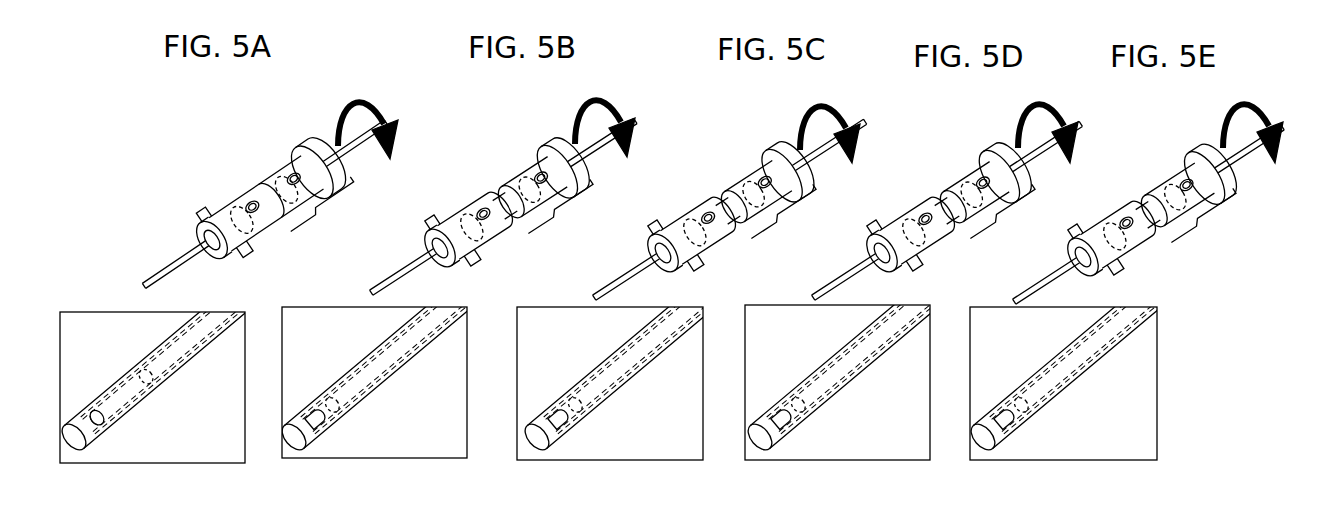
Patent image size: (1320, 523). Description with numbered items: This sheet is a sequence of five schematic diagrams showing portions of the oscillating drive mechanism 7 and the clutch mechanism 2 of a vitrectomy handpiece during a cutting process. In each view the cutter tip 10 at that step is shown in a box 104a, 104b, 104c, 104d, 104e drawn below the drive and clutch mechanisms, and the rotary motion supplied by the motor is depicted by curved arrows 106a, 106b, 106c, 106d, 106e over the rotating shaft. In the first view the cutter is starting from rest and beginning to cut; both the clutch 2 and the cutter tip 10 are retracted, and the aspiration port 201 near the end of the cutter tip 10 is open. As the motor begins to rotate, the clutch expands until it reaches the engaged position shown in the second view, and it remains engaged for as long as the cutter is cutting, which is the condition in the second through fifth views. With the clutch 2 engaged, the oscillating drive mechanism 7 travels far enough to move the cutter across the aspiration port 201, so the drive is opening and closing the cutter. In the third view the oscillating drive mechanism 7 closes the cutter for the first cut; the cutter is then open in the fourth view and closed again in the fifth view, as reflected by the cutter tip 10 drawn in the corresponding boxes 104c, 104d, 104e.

In FIG. 5A, the clutch mechanism 2 is at (330, 168).
In FIG. 5B, the clutch mechanism 2 is at (568, 168).
In FIG. 5C, the clutch mechanism 2 is at (794, 171).
In FIG. 5D, the clutch mechanism 2 is at (1012, 172).
In FIG. 5E, the clutch mechanism 2 is at (1213, 175).
In FIG. 5A, the oscillating drive mechanism 7 is at (233, 207).
In FIG. 5B, the oscillating drive mechanism 7 is at (458, 212).
In FIG. 5C, the oscillating drive mechanism 7 is at (680, 218).
In FIG. 5D, the oscillating drive mechanism 7 is at (908, 212).
In FIG. 5E, the oscillating drive mechanism 7 is at (1102, 227).
In FIG. 5A, the cutter tip 10 is at (160, 278).
In FIG. 5B, the cutter tip 10 is at (392, 280).
In FIG. 5C, the cutter tip 10 is at (614, 287).
In FIG. 5D, the cutter tip 10 is at (834, 287).
In FIG. 5E, the cutter tip 10 is at (1036, 289).
In FIG. 5A, the aspiration port 201 is at (103, 405).
In FIG. 5A, the curved arrow 106a is at (353, 104).
In FIG. 5B, the curved arrow 106b is at (582, 108).
In FIG. 5C, the curved arrow 106c is at (808, 112).
In FIG. 5D, the curved arrow 106d is at (1022, 115).
In FIG. 5E, the curved arrow 106e is at (1228, 115).
In FIG. 5A, the box 104a is at (138, 463).
In FIG. 5B, the box 104b is at (355, 458).
In FIG. 5C, the box 104c is at (607, 460).
In FIG. 5D, the box 104d is at (828, 460).
In FIG. 5E, the box 104e is at (1030, 460).